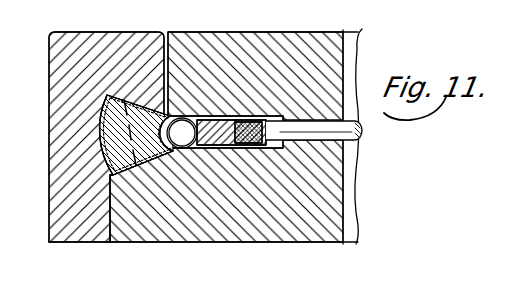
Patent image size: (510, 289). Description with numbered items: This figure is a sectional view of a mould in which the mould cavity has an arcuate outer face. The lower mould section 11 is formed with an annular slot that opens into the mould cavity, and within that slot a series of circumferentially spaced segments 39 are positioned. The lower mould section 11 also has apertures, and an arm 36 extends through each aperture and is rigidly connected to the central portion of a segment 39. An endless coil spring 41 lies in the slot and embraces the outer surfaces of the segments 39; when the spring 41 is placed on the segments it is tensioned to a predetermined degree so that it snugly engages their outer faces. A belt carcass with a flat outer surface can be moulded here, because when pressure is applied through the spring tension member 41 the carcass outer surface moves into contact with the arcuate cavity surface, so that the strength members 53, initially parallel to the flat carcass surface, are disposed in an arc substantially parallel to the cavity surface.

The strength members 53 is at (135, 103).
The endless coil spring 41 is at (193, 115).
The lower mould section 11 is at (302, 50).
The arm 36 is at (362, 132).
The segments 39 is at (232, 146).